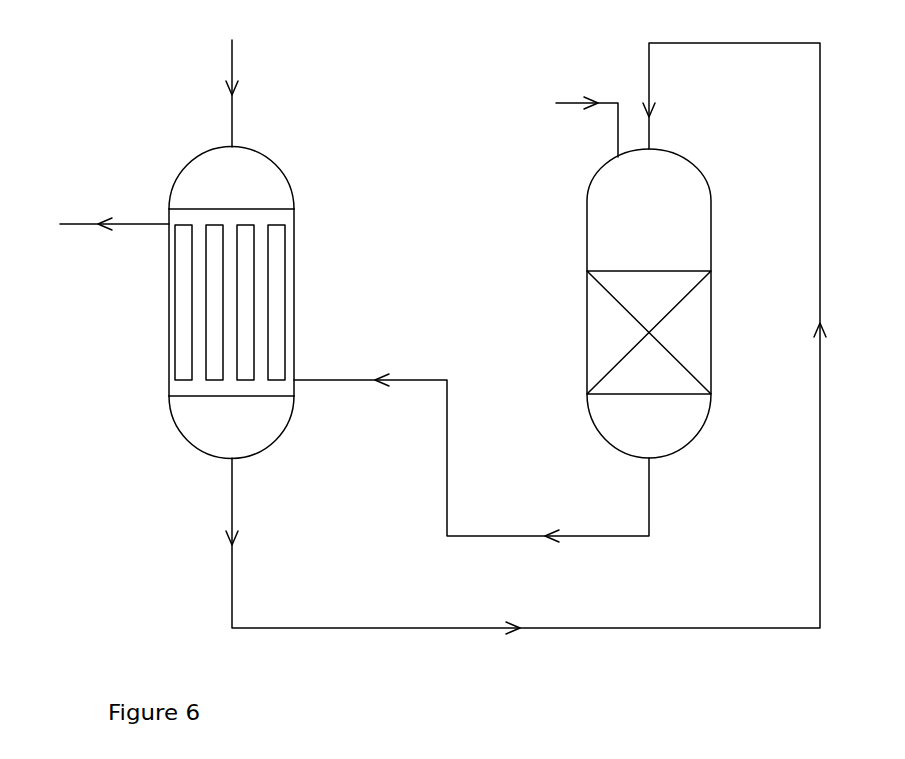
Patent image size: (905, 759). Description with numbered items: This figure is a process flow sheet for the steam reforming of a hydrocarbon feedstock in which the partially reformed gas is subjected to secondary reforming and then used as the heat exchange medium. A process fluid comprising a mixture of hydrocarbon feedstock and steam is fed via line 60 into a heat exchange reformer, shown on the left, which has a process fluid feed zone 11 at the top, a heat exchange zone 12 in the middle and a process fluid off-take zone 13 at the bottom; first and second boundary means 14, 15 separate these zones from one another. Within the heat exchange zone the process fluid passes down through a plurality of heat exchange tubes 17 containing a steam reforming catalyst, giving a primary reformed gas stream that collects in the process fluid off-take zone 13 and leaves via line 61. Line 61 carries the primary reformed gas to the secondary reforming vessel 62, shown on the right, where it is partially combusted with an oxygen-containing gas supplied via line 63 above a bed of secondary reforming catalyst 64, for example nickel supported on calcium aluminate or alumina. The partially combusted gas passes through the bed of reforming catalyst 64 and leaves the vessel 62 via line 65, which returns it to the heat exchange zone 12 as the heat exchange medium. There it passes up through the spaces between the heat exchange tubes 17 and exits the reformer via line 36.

The process fluid feed zone 11 is at (248, 179).
The heat exchange zone 12 is at (292, 290).
The process fluid off-take zone 13 is at (247, 435).
The first boundary means 14 is at (200, 208).
The second boundary means 15 is at (200, 395).
The heat exchange tubes 17 is at (185, 286).
The line 36 is at (77, 222).
The line 60 is at (232, 70).
The line 61 is at (445, 628).
The secondary reforming vessel 62 is at (588, 194).
The line 63 is at (572, 102).
The bed of secondary reforming catalyst 64 is at (618, 292).
The line 65 is at (448, 458).